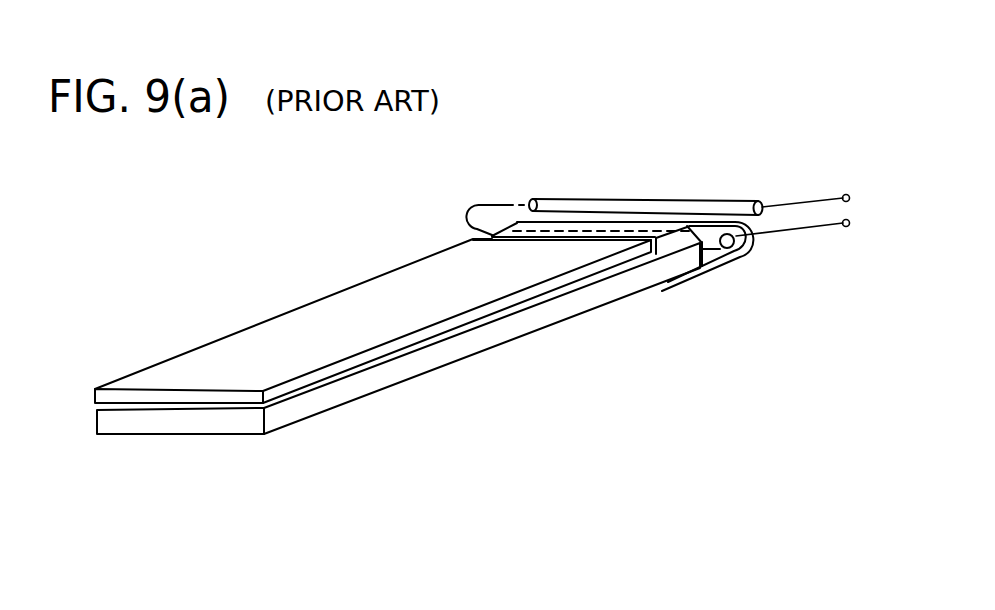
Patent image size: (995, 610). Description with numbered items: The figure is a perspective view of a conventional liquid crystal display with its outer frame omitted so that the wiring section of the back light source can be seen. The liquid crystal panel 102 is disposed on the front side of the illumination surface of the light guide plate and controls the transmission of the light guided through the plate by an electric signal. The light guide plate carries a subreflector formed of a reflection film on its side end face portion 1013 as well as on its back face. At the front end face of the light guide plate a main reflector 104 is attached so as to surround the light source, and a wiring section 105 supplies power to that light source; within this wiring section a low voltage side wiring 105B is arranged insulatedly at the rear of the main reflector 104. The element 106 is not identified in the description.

The liquid crystal panel 102 is at (385, 289).
The side end face portion 1013 is at (317, 404).
The main reflector 104 is at (734, 259).
The wiring section 105 is at (828, 233).
The low voltage side wiring 105B is at (715, 203).
The reflector sheet 106 is at (613, 234).